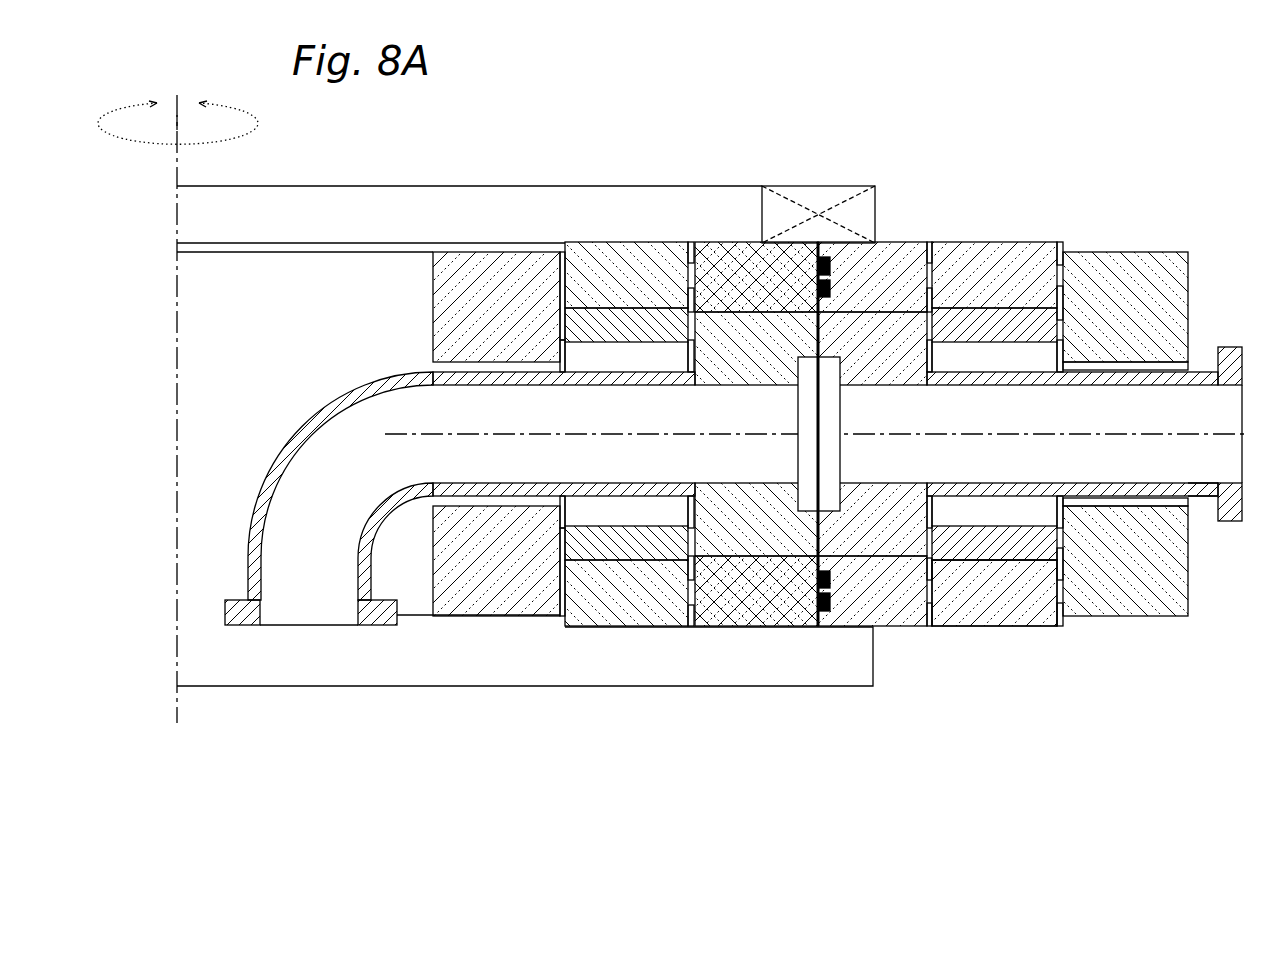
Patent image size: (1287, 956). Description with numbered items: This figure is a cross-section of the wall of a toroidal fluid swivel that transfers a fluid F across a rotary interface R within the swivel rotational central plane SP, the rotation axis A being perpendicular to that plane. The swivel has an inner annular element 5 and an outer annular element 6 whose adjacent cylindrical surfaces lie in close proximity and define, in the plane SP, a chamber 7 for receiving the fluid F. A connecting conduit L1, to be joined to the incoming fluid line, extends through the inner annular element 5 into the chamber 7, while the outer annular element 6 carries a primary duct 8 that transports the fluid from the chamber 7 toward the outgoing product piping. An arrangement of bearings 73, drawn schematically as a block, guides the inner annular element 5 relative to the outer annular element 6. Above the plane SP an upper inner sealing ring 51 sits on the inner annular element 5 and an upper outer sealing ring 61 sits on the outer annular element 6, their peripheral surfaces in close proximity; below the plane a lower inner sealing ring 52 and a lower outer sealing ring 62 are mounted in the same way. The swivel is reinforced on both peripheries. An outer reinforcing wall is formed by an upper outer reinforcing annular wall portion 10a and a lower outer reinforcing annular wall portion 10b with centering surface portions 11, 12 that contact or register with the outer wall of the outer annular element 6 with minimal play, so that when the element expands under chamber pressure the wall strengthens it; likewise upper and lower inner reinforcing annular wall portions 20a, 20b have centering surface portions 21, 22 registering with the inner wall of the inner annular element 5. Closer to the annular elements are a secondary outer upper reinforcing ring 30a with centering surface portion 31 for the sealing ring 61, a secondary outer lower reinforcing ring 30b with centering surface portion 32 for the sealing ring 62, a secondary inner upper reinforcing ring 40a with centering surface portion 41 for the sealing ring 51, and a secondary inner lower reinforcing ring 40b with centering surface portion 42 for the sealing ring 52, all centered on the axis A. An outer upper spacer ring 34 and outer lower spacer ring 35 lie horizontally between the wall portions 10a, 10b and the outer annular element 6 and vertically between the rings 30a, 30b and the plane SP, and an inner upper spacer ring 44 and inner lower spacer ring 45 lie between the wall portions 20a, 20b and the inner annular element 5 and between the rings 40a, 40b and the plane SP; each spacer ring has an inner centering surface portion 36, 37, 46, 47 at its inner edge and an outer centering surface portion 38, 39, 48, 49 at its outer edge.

The inner annular element 5 is at (757, 520).
The outer annular element 6 is at (893, 350).
The chamber 7 is at (838, 407).
The primary duct 8 is at (1195, 492).
The upper outer reinforcing annular wall portion 10a is at (1127, 305).
The lower outer reinforcing annular wall portion 10b is at (1130, 572).
The centering surface portion 11 is at (1063, 327).
The centering surface portion 12 is at (1065, 590).
The upper inner reinforcing annular wall portion 20a is at (498, 290).
The lower inner reinforcing annular wall portion 20b is at (490, 580).
The centering surface portion 21 is at (563, 328).
The centering surface portion 22 is at (560, 545).
The secondary outer upper reinforcing ring 30a is at (1005, 285).
The secondary outer lower reinforcing ring 30b is at (1030, 597).
The secondary peripheral centering surface portion 31 is at (933, 270).
The secondary peripheral centering surface portion 32 is at (940, 595).
The outer upper spacer ring 34 is at (1018, 325).
The outer lower spacer ring 35 is at (1018, 545).
The inner centering surface portion 36 is at (928, 327).
The inner centering surface portion 37 is at (935, 540).
The outer centering surface portion 38 is at (1045, 340).
The outer centering surface portion 39 is at (1052, 540).
The secondary inner upper reinforcing ring 40a is at (618, 267).
The secondary inner lower reinforcing ring 40b is at (613, 593).
The secondary peripheral centering surface portion 41 is at (688, 258).
The secondary peripheral centering surface portion 42 is at (688, 590).
The inner upper spacer ring 44 is at (608, 325).
The inner lower spacer ring 45 is at (613, 540).
The inner centering surface portion 46 is at (690, 327).
The inner centering surface portion 47 is at (690, 535).
The outer centering surface portion 48 is at (565, 335).
The outer centering surface portion 49 is at (578, 533).
The upper inner sealing ring 51 is at (735, 270).
The lower inner sealing ring 52 is at (752, 600).
The upper outer sealing ring 61 is at (895, 280).
The lower outer sealing ring 62 is at (882, 605).
The bearings 73 is at (822, 186).
The rotation axis A is at (178, 425).
The fluid F is at (770, 424).
The connecting conduit L1 is at (278, 482).
The rotary interface R is at (822, 495).
The swivel rotational central plane SP is at (1247, 432).